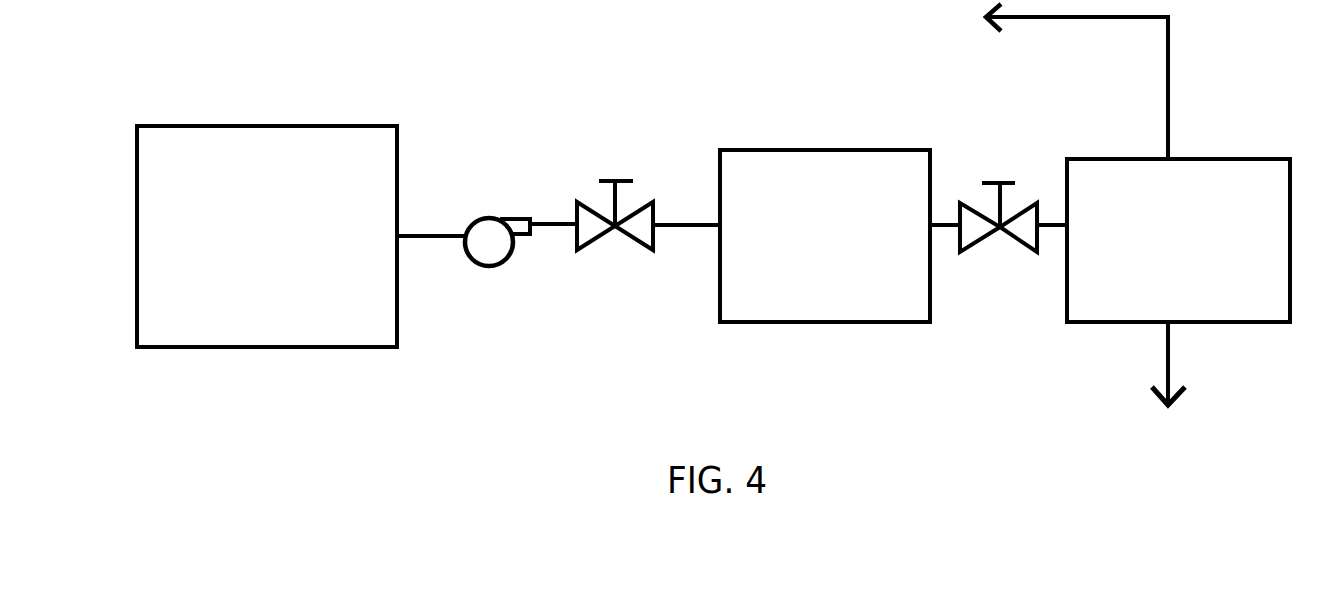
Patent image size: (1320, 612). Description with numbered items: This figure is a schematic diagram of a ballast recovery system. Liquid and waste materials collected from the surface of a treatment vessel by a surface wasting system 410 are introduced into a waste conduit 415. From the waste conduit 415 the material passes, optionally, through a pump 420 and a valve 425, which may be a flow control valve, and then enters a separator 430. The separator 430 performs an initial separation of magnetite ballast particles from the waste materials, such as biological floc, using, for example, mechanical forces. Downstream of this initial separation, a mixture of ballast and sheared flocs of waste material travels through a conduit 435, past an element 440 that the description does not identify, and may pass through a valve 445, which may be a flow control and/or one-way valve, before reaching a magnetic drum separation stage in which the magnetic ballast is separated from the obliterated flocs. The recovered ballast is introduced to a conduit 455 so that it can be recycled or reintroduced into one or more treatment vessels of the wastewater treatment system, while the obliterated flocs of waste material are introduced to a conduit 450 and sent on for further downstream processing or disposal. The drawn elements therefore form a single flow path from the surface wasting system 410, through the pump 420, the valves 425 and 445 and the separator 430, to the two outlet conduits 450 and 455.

The surface wasting system 410 is at (240, 227).
The waste conduit 415 is at (423, 236).
The pump 420 is at (490, 250).
The valve 425 is at (620, 228).
The separator 430 is at (778, 245).
The conduit 435 is at (943, 223).
The valve 440 is at (1018, 237).
The valve 445 is at (1147, 250).
The conduit 450 is at (1168, 357).
The conduit 455 is at (1168, 80).